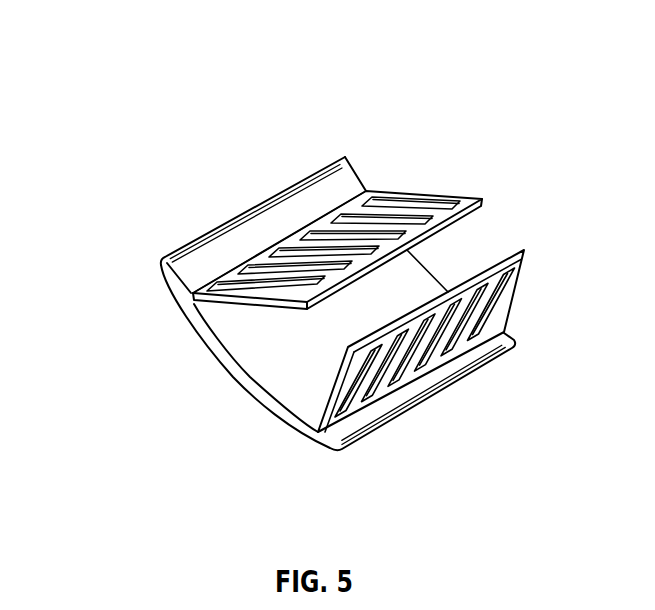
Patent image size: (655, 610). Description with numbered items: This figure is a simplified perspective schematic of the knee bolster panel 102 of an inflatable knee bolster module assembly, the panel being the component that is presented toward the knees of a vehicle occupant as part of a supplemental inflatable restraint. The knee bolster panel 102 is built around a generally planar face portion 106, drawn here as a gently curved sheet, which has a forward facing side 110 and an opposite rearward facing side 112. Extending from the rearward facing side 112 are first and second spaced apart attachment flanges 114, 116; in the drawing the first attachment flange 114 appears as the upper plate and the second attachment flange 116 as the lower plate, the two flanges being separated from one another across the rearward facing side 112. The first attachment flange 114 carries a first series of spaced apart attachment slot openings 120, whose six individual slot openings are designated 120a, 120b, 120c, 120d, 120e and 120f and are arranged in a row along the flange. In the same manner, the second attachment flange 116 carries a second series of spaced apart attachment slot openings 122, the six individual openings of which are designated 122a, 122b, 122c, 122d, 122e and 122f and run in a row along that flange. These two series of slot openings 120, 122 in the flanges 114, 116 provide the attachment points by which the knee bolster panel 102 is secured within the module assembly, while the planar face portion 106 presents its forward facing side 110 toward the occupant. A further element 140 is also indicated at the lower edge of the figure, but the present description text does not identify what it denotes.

The knee bolster panel 102 is at (408, 167).
The generally planar face portion 106 is at (230, 387).
The forward facing side 110 is at (195, 329).
The rearward facing side 112 is at (430, 277).
The first attachment flange 114 is at (462, 194).
The second attachment flange 116 is at (517, 283).
The first series of spaced apart attachment slot openings 120 is at (177, 262).
The attachment slot opening 120a is at (203, 270).
The attachment slot opening 120b is at (243, 270).
The attachment slot opening 120c is at (274, 252).
The attachment slot opening 120d is at (305, 236).
The attachment slot opening 120e is at (336, 218).
The attachment slot opening 120f is at (367, 202).
The second series of spaced apart attachment slot openings 122 is at (515, 310).
The attachment slot opening 122a is at (351, 402).
The attachment slot opening 122b is at (378, 390).
The attachment slot opening 122c is at (400, 373).
The attachment slot opening 122d is at (432, 360).
The attachment slot opening 122e is at (452, 343).
The attachment slot opening 122f is at (487, 330).
The support member 140 is at (477, 609).